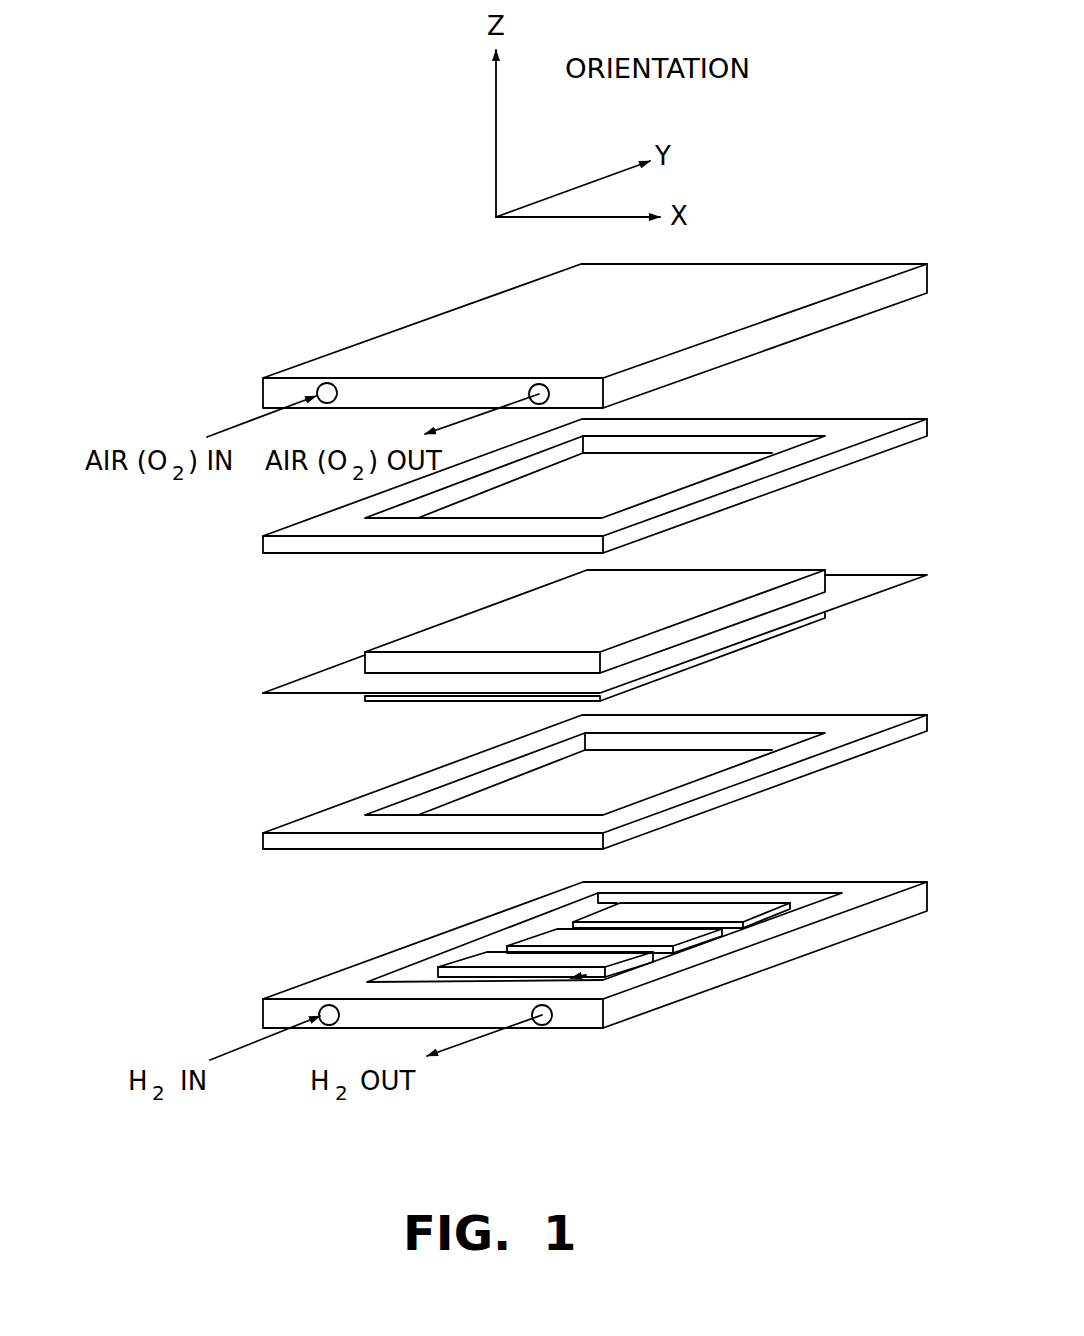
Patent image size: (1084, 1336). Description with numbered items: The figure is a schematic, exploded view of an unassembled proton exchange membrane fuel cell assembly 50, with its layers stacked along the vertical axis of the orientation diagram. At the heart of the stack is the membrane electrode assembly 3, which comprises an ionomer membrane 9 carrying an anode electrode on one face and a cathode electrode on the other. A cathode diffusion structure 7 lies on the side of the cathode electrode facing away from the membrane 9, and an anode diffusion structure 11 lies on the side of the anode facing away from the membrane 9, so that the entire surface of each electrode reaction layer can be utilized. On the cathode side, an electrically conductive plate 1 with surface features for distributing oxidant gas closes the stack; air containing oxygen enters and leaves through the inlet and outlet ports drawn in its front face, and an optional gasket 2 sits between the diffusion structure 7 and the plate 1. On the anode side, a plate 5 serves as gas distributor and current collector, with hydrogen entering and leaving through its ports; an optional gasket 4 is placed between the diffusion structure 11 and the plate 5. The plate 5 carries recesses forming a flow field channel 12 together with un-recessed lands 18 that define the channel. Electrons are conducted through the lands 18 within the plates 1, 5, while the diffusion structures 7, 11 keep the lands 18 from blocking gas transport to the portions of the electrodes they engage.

The plate 1 is at (834, 270).
The gasket 2 is at (836, 426).
The membrane electrode assembly 3 is at (608, 613).
The gasket 4 is at (854, 713).
The plate 5 is at (606, 919).
The cathode diffusion structure 7 is at (425, 637).
The ionomer membrane 9 is at (888, 573).
The anode diffusion structure 11 is at (427, 701).
The flow field channel 12 is at (492, 945).
The lands 18 is at (593, 933).
The fuel cell assembly 50 is at (776, 1050).